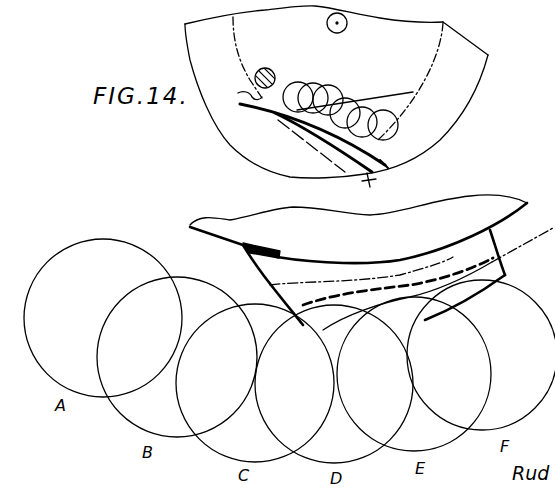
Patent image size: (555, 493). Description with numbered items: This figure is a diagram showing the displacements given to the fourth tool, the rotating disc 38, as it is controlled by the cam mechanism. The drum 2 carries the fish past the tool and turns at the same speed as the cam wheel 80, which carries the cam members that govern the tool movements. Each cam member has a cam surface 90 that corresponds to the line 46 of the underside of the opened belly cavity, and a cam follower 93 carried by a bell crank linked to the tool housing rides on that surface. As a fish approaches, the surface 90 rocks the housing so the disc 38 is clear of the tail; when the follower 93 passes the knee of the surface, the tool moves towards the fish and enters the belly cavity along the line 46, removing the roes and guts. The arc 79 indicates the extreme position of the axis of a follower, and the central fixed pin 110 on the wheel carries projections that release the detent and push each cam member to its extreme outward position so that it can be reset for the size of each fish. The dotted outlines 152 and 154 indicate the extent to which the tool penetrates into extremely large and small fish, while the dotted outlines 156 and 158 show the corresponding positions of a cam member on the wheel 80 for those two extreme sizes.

The drum 2 is at (507, 206).
The rotating disc 38 is at (93, 252).
The line 46 is at (473, 265).
The arc 79 is at (443, 50).
The cam wheel 80 is at (473, 72).
The cam surface 90 is at (377, 163).
The cam follower 93 is at (293, 87).
The fixed pin 110 is at (254, 76).
The dotted outline 152 is at (512, 258).
The dotted outline 154 is at (431, 269).
The dotted outline 156 is at (397, 135).
The dotted outline 158 is at (373, 183).